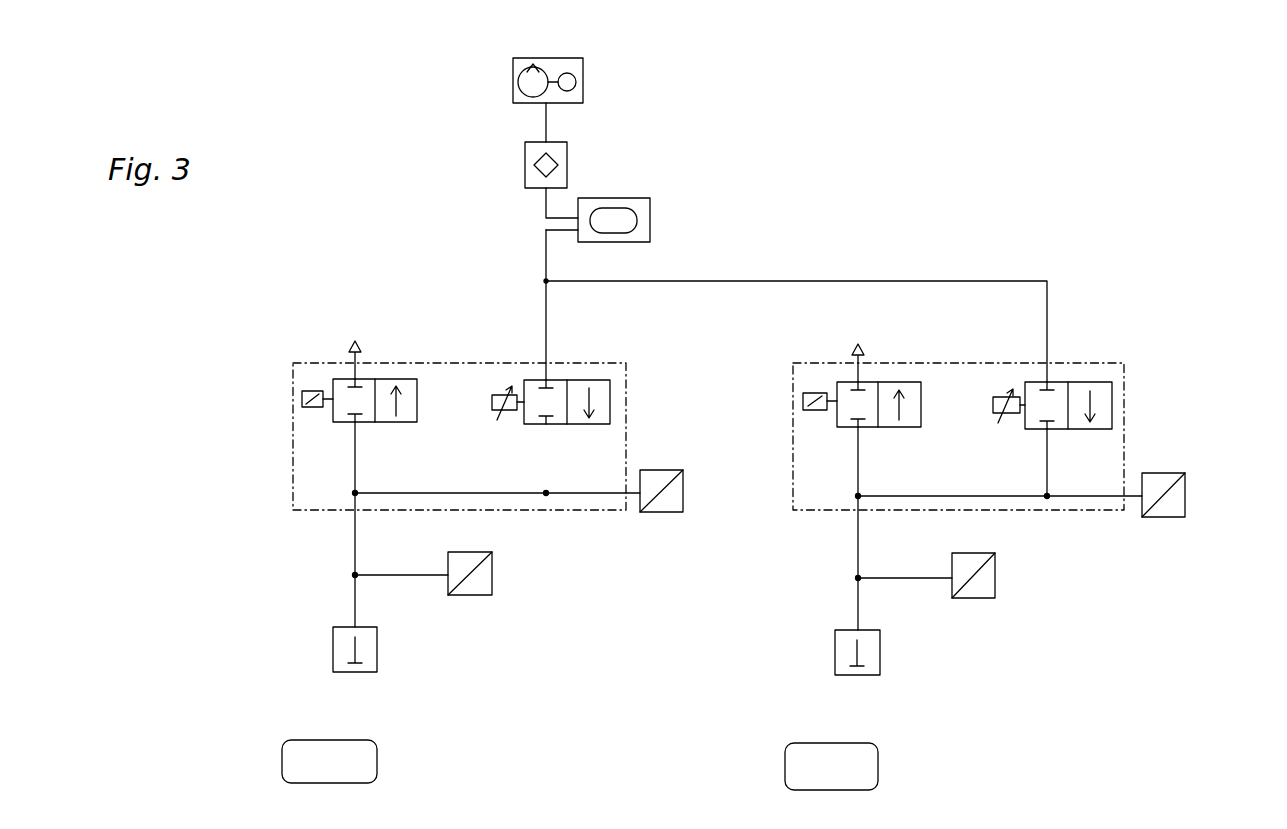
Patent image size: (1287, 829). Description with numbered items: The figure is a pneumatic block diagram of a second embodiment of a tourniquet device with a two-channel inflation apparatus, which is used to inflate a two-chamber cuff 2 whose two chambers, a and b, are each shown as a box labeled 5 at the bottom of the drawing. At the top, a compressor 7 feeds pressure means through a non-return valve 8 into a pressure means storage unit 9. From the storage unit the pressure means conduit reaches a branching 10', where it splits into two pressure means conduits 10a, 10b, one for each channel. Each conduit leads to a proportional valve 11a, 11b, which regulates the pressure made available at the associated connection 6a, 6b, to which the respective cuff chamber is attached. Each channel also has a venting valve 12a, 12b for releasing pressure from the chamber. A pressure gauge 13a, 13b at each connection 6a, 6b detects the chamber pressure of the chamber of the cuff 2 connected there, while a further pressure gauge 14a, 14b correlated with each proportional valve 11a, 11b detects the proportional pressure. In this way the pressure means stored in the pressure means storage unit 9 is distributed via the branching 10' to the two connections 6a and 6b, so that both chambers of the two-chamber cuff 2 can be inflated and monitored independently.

The two-chamber cuff 2 is at (405, 778).
The bellows a / b 5 is at (352, 740).
The connection 6a is at (377, 652).
The connection 6b is at (880, 655).
The compressor 7 is at (585, 92).
The non-return valve 8 is at (569, 168).
The pressure means storage unit 9 is at (652, 218).
The branching 10' is at (747, 306).
The pressure means conduit 10a is at (546, 325).
The pressure means conduit 10b is at (837, 281).
The proportional valve 11a is at (612, 396).
The proportional valve 11b is at (1112, 395).
The venting valve 12a is at (398, 380).
The venting valve 12b is at (905, 382).
The pressure gauge 13a is at (479, 597).
The pressure gauge 13b is at (975, 600).
The pressure gauge 14a is at (685, 495).
The pressure gauge 14b is at (1188, 495).